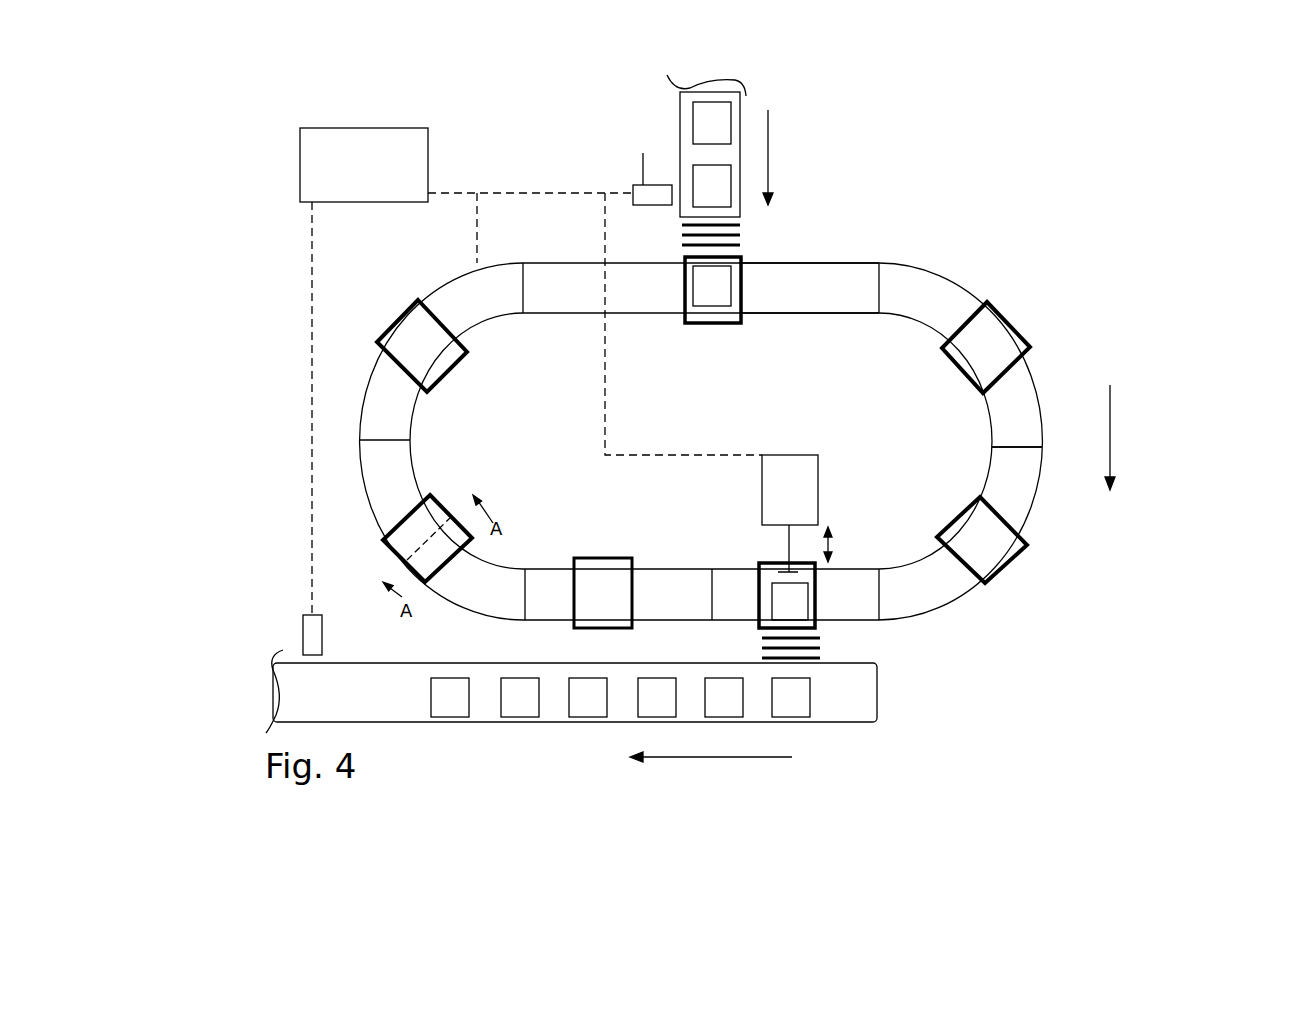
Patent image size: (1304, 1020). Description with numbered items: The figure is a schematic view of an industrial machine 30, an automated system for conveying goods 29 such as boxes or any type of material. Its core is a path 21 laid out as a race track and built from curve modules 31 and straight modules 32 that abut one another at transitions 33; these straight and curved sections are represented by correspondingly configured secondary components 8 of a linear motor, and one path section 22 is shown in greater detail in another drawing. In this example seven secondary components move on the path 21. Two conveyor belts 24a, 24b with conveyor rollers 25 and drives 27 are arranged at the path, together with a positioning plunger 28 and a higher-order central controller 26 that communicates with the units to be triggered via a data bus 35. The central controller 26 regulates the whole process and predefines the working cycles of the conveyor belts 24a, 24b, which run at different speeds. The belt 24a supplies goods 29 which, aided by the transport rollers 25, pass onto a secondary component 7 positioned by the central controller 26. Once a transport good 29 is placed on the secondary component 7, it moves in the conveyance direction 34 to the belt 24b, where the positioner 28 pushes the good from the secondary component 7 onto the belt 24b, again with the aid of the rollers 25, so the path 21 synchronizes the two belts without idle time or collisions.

The secondary component 7 is at (1012, 322).
The secondary components 8 is at (498, 292).
The path 21 is at (474, 432).
The path section 22 is at (663, 523).
The conveyor belt 24a is at (742, 108).
The conveyor belt 24b is at (240, 666).
The conveyor rollers 25 is at (750, 234).
The central controller 26 is at (370, 125).
The drives 27 is at (322, 633).
The positioning plunger 28 is at (798, 455).
The goods 29 is at (712, 100).
The industrial machine 30 is at (947, 213).
The curve modules 31 is at (1025, 427).
The straight modules 32 is at (826, 285).
The transitions 33 is at (873, 297).
The conveyance direction 34 is at (887, 450).
The data bus 35 is at (537, 388).